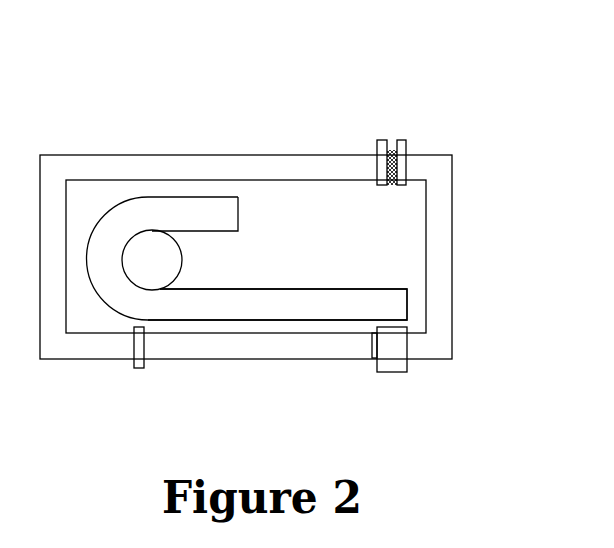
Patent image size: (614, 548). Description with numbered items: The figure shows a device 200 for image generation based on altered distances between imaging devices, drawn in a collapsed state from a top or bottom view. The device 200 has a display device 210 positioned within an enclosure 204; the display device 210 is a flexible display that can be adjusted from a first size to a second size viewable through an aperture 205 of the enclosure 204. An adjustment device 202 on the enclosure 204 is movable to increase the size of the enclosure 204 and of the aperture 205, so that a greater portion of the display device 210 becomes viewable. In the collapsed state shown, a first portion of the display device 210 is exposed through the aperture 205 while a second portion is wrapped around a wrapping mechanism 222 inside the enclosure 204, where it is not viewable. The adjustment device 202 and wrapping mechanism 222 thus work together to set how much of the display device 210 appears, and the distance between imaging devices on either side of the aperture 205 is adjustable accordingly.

The device 200 is at (510, 80).
The adjustment device 202 is at (392, 152).
The enclosure 204 is at (62, 168).
The aperture 205 is at (246, 325).
The display device 210 is at (332, 322).
The wrapping mechanism 222 is at (155, 290).